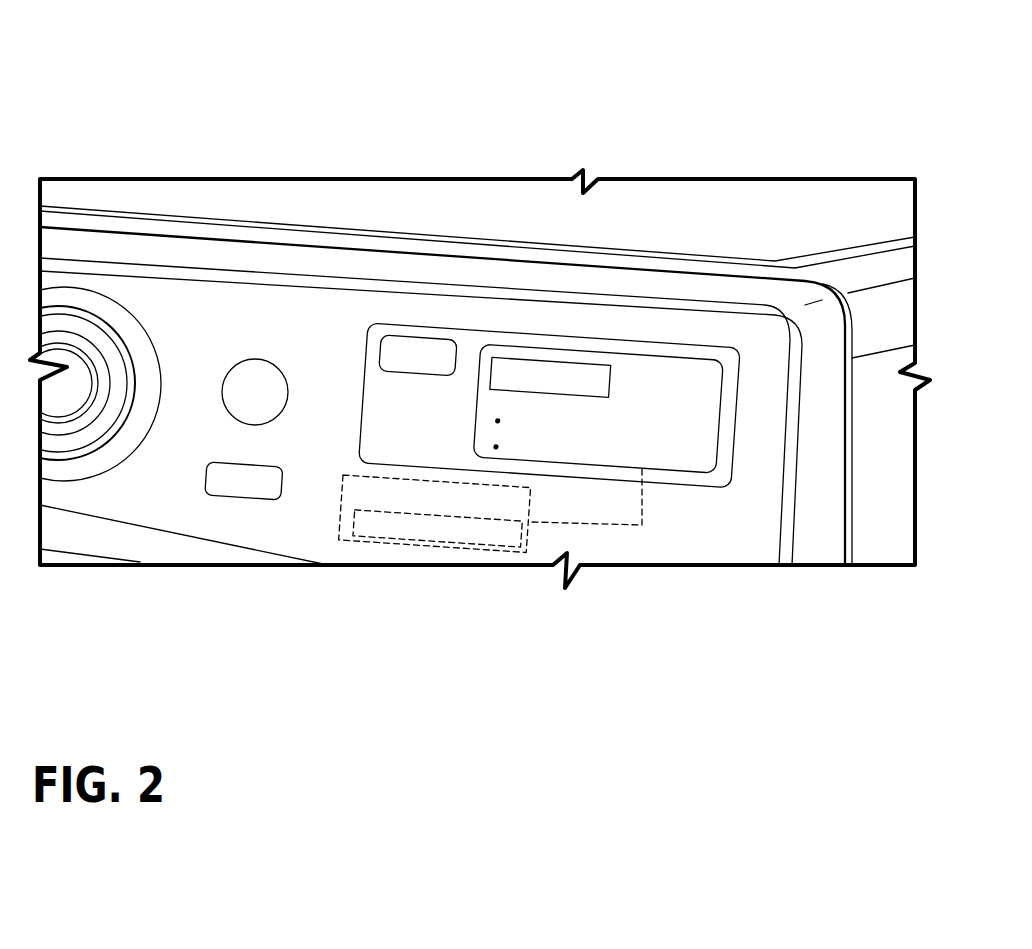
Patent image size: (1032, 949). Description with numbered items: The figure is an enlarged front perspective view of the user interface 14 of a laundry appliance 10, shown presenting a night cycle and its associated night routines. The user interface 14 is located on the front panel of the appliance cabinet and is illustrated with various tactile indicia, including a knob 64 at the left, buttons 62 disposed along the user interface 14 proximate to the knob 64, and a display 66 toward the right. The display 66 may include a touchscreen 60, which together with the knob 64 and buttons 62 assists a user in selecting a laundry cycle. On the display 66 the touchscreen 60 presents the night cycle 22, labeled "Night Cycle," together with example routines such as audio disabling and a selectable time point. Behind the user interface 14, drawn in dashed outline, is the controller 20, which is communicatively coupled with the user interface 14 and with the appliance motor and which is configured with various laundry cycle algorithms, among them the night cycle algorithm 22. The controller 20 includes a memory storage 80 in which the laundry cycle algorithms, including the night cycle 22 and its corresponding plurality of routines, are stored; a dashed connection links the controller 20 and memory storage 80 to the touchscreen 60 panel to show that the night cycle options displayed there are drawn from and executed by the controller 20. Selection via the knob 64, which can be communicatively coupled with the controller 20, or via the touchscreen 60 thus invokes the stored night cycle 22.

The laundry appliance 10 is at (200, 113).
The user interface 14 is at (333, 365).
The controller 20 is at (341, 501).
The night cycle algorithm 22 is at (580, 360).
The touchscreen 60 is at (695, 478).
The buttons 62 is at (242, 380).
The knob 64 is at (72, 350).
The display 66 is at (440, 327).
The memory storage 80 is at (395, 538).